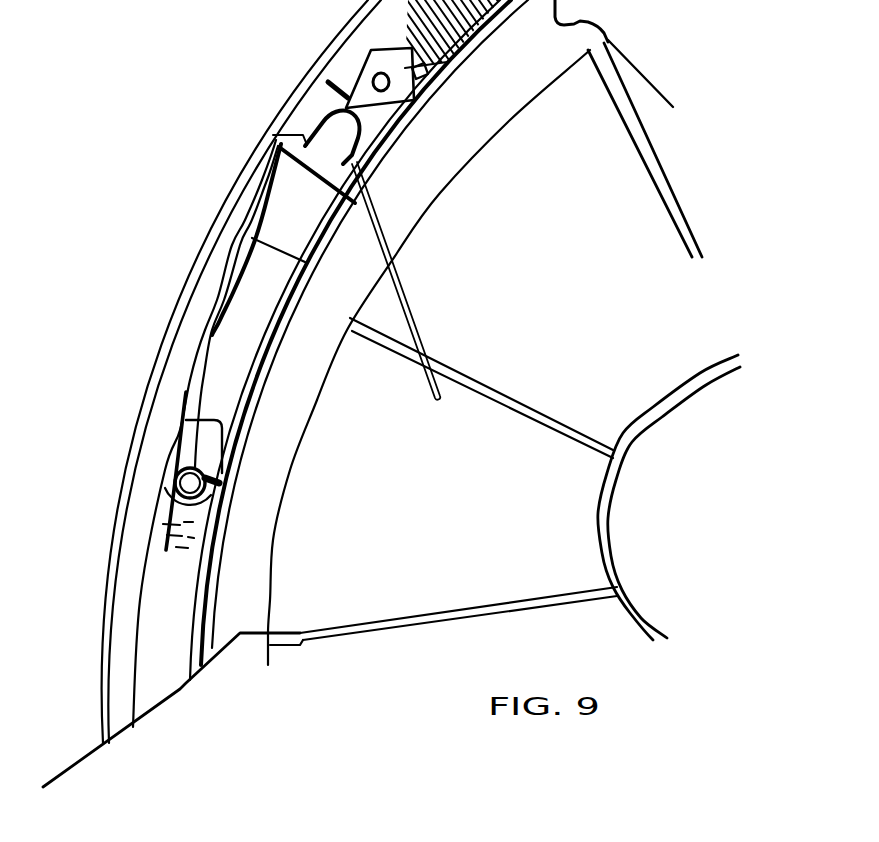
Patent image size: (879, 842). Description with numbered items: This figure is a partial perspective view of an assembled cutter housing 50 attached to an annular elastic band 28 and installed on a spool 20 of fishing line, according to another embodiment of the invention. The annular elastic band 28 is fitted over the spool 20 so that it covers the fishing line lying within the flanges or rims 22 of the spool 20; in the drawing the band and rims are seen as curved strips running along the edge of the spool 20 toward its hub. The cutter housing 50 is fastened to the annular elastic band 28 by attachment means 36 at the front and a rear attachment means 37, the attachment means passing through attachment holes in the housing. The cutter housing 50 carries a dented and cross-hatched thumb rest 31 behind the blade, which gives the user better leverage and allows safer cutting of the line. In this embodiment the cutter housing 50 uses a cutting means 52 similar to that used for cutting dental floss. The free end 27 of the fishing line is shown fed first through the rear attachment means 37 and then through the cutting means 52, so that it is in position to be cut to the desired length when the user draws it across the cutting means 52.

The spool 20 is at (583, 505).
The flanges or rims 22 is at (533, 43).
The free end 27 is at (202, 332).
The annular elastic band 28 is at (160, 585).
The thumb rest 31 is at (287, 217).
The attachment means 36 is at (374, 74).
The rear attachment means 37 is at (183, 474).
The cutter housing 50 is at (325, 87).
The cutting means 52 is at (318, 125).